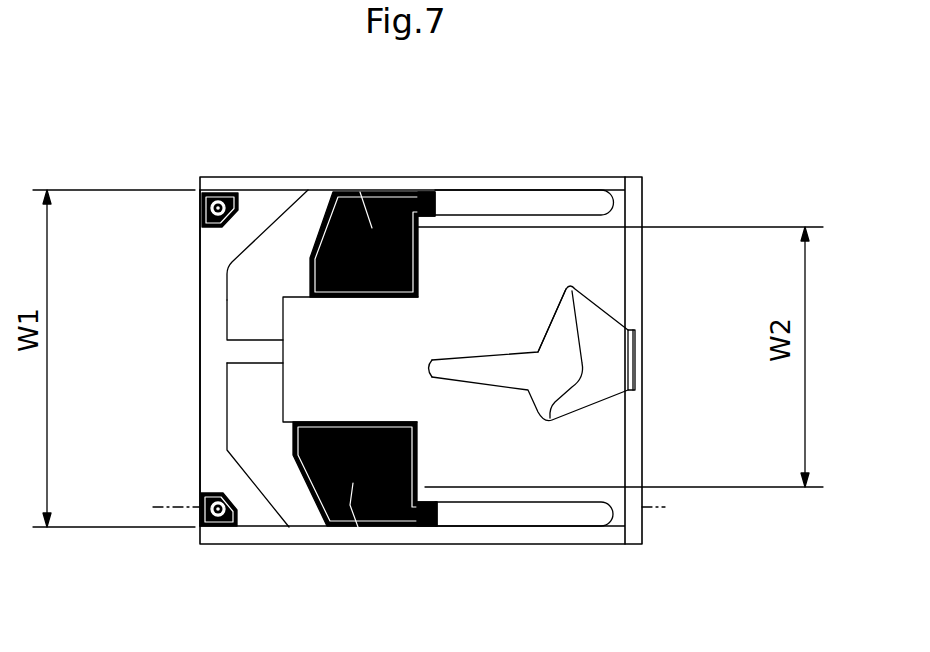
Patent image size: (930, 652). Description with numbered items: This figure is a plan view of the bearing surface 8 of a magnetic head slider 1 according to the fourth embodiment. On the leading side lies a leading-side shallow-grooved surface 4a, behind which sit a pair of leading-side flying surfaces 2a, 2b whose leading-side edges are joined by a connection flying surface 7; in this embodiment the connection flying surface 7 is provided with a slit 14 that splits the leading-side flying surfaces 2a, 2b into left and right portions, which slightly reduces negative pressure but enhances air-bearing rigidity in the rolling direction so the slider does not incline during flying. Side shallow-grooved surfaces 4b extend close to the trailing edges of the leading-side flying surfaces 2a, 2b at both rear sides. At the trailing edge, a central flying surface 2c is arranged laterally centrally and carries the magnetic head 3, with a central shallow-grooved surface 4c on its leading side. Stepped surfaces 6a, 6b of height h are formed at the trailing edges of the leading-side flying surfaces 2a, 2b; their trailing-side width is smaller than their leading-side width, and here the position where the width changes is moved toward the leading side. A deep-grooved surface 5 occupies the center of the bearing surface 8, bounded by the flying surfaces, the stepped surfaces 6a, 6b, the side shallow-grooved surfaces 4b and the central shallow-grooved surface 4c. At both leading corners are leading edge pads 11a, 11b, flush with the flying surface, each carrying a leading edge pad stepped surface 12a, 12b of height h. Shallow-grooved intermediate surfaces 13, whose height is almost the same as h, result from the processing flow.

The slider 1 is at (202, 417).
The leading-side flying surface 2a is at (270, 250).
The leading-side flying surface 2b is at (278, 467).
The central flying surface 2c is at (603, 330).
The magnetic head 3 is at (637, 365).
The leading-side shallow-grooved surface 4a is at (213, 348).
The side shallow-grooved surface 4b is at (478, 205).
The central shallow-grooved surface 4c is at (565, 340).
The deep-grooved surface 5 is at (495, 278).
The stepped surface 6a is at (360, 192).
The stepped surface 6b is at (358, 527).
The connection flying surface 7 is at (243, 313).
The bearing surface 8 is at (292, 208).
The leading edge pad 11a is at (213, 200).
The leading edge pad 11b is at (213, 515).
The leading edge pad stepped surface 12a is at (222, 200).
The leading edge pad stepped surface 12b is at (220, 512).
The shallow-grooved intermediate surface 13 is at (202, 223).
The slit 14 is at (247, 353).